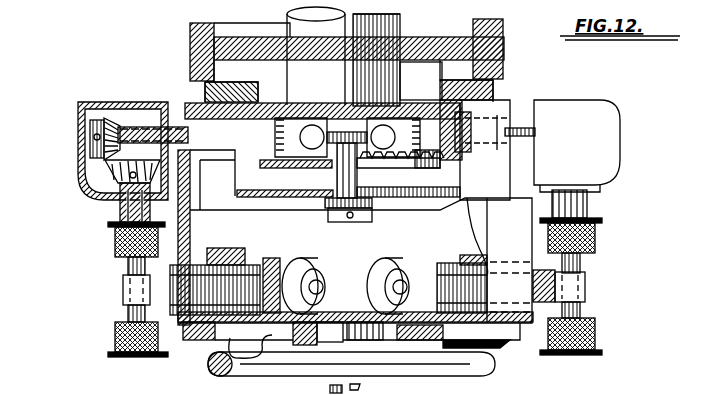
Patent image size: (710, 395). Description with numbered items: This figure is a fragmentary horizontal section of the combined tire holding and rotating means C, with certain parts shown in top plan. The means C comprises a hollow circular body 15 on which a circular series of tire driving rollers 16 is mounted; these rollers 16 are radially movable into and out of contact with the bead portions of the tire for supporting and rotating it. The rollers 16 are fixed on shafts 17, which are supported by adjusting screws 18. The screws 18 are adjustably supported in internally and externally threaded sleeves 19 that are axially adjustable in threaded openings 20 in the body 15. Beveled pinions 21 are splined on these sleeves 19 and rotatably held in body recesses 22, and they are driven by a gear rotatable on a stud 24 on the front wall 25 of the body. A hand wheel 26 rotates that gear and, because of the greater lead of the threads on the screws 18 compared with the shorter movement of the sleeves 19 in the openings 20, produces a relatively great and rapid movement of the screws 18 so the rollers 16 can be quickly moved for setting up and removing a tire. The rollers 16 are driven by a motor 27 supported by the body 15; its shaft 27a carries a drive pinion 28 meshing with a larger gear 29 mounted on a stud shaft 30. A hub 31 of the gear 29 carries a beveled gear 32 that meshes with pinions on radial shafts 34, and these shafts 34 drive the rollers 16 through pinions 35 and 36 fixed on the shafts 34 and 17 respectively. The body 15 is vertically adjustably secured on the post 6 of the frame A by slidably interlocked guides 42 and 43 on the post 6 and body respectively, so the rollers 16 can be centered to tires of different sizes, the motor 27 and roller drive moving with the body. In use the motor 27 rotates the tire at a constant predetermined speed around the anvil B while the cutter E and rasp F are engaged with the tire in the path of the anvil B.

The frame A is at (520, 37).
The post 6 is at (268, 55).
The guide 43 is at (215, 82).
The motor 27 is at (405, 75).
The motor shaft 27a is at (343, 225).
The guide 42 is at (470, 100).
The beveled gear 32 is at (425, 160).
The pinion 35 is at (110, 118).
The radial shaft 34 is at (137, 133).
The pinion 36 is at (118, 172).
The shaft 17 is at (135, 205).
The tire driving roller 16 is at (125, 246).
The adjusting screw 18 is at (126, 291).
The combined tire holding and rotating means C is at (77, 270).
The hollow circular body 15 is at (566, 200).
The gear 29 is at (240, 188).
The stud shaft 30 is at (312, 180).
The hub 31 is at (380, 180).
The drive pinion 28 is at (374, 208).
The body recess 22 is at (210, 250).
The stud 24 is at (343, 310).
The front wall 25 is at (366, 312).
The threaded sleeve 19 is at (451, 262).
The threaded opening 20 is at (555, 196).
The beveled pinion 21 is at (190, 330).
The hand wheel 26 is at (480, 376).
The rasp F is at (316, 393).
The tire detreading cutter E is at (381, 393).
The tire supporting anvil B is at (558, 386).